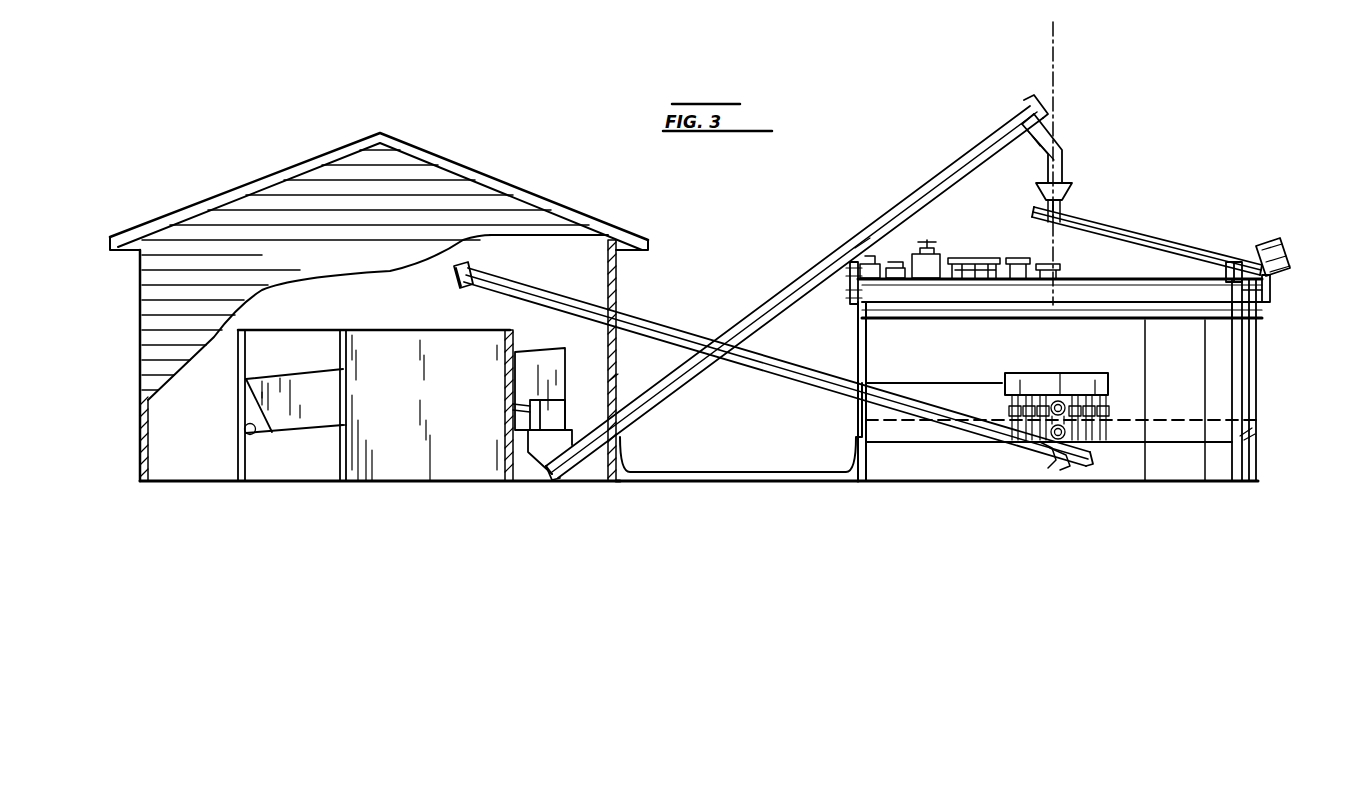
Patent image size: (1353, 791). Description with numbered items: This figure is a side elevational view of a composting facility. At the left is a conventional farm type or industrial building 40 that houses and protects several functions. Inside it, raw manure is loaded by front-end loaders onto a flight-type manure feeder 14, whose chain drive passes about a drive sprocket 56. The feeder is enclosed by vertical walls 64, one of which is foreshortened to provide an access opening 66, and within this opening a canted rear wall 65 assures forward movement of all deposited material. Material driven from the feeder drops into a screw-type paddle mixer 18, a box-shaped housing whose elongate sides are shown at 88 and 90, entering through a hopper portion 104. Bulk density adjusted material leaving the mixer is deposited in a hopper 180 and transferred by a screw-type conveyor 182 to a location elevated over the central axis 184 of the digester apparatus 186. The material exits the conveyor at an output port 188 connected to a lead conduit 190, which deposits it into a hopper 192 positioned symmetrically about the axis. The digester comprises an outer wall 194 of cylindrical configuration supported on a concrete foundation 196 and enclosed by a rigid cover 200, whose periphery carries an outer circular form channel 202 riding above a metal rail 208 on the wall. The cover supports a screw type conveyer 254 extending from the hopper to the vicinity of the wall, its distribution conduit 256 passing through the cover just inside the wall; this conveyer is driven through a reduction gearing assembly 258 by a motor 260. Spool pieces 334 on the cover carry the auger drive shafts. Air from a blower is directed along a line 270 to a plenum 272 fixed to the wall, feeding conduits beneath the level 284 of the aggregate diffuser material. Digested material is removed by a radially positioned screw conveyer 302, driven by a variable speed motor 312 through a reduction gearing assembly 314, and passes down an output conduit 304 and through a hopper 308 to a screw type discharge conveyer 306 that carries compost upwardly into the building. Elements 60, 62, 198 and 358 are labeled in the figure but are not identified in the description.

The building 40 is at (503, 180).
The partition wall 62 is at (330, 332).
The manure feeder 14 is at (318, 363).
The bin wall 60 is at (240, 391).
The drive sprocket 56 is at (243, 430).
The canted rear wall 65 is at (272, 402).
The vertical walls 64 is at (433, 391).
The access opening 66 is at (326, 447).
The elongate side of mixer housing 88 is at (532, 414).
The hopper portion 104 is at (520, 430).
The elongate side of mixer housing 90 is at (565, 412).
The screw-type paddle mixer 18 is at (587, 405).
The hopper 180 is at (545, 455).
The air line 270 is at (742, 474).
The discharge conveyer 306 is at (798, 385).
The foundation 196 is at (930, 470).
The screw-type conveyor 182 is at (798, 276).
The conveyor frame 358 is at (863, 240).
The spool pieces 334 is at (920, 256).
The central axis 184 is at (1054, 48).
The output port 188 is at (1044, 136).
The lead conduit 190 is at (1034, 155).
The hopper 192 is at (1068, 190).
The digester apparatus 186 is at (1185, 163).
The screw type conveyer 254 is at (1135, 236).
The distribution conduit 256 is at (1232, 262).
The motor 260 is at (1270, 242).
The reduction gearing assembly 258 is at (1274, 276).
The rigid cover 200 is at (1088, 282).
The outer circular form channel 202 is at (1002, 290).
The metal rail 208 is at (1142, 318).
The outer wall 194 is at (1254, 364).
The level of diffuser material 284 is at (1254, 420).
The tank wall layer 198 is at (1252, 432).
The variable speed motor 312 is at (1056, 374).
The plenum 272 is at (1108, 386).
The screw conveyer 302 is at (1096, 432).
The reduction gearing assembly 314 is at (1072, 452).
The output conduit 304 is at (1065, 455).
The hopper 308 is at (1050, 458).